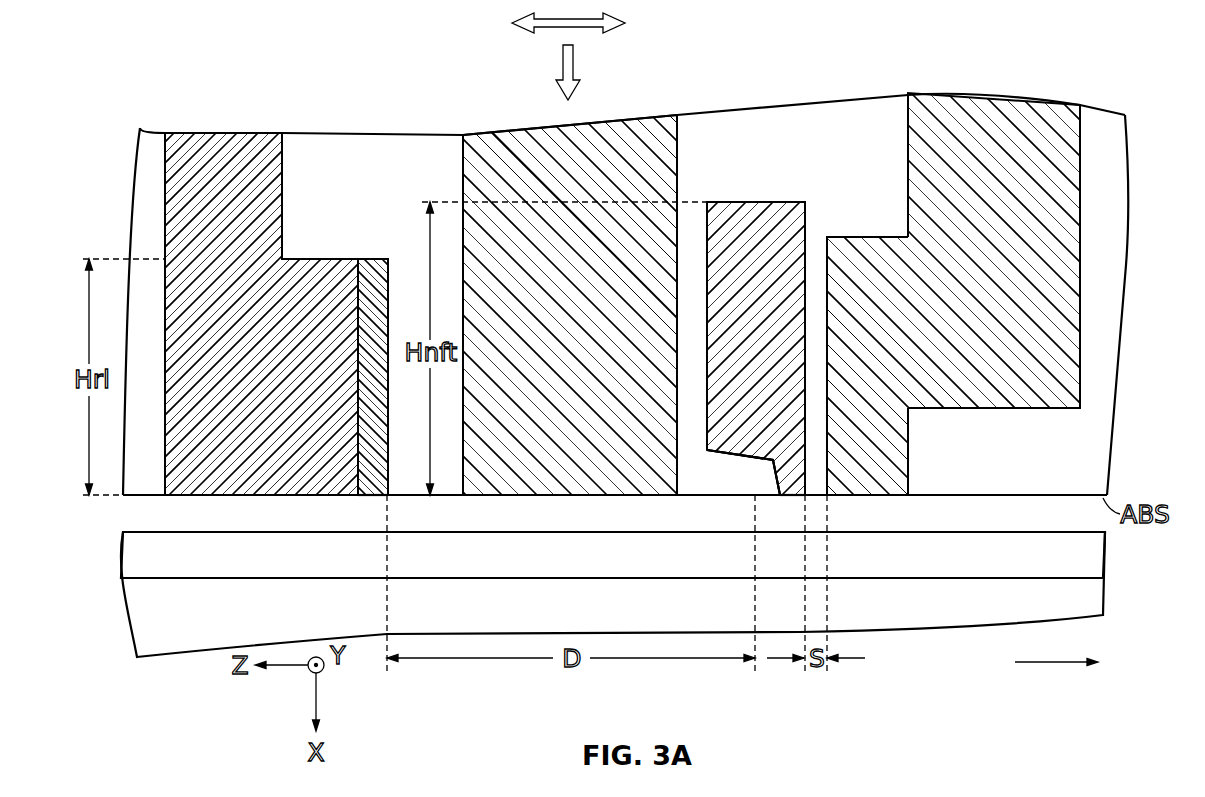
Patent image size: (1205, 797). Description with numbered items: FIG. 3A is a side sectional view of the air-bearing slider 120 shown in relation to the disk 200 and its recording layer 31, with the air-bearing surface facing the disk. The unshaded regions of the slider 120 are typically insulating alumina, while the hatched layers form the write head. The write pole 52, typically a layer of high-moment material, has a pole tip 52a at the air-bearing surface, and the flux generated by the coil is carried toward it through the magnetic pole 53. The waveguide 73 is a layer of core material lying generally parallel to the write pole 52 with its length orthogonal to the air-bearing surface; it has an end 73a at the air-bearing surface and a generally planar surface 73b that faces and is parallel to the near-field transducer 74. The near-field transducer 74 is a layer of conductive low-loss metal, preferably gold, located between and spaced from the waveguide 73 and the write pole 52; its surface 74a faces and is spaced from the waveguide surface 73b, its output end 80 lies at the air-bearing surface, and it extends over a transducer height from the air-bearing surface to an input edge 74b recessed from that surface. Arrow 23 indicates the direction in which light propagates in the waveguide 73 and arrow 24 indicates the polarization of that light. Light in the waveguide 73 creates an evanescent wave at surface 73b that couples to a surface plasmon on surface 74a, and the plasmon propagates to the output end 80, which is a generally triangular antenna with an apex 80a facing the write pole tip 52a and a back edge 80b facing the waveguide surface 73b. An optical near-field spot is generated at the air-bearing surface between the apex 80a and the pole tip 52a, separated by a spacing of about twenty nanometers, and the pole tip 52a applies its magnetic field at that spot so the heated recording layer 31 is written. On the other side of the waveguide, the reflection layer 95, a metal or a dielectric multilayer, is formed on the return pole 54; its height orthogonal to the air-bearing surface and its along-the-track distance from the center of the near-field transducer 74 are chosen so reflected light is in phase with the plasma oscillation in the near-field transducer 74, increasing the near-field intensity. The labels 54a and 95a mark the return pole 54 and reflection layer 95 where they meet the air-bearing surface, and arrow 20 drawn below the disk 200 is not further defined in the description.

The magnetic recording medium motion direction 20 is at (1040, 665).
The arrow 23 is at (558, 78).
The arrow 24 is at (597, 17).
The recording layer 31 is at (1092, 561).
The write pole 52 is at (897, 461).
The pole tip 52a is at (898, 497).
The magnetic pole 53 is at (1062, 165).
The return pole 54 is at (234, 144).
The shield ABS end 54a is at (233, 497).
The waveguide 73 is at (490, 142).
The end 73a is at (497, 497).
The planar surface 73b is at (678, 170).
The near-field transducer 74 is at (793, 233).
The surface 74a is at (707, 290).
The input edge 74b is at (772, 200).
The output end 80 is at (773, 468).
The apex 80a is at (805, 497).
The back edge 80b is at (706, 448).
The reflection layer 95 is at (372, 258).
The side layer ABS end 95a is at (368, 497).
The air-bearing slider 120 is at (825, 118).
The disk 200 is at (1093, 597).